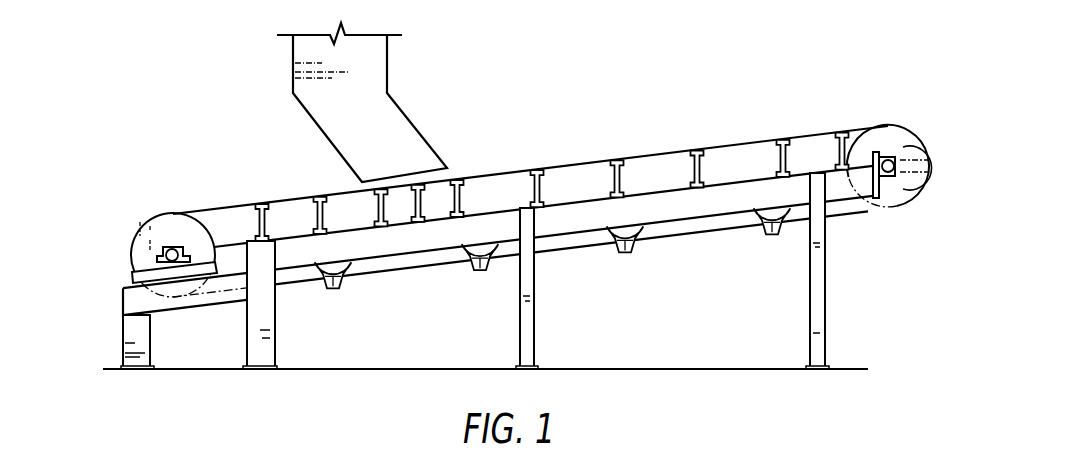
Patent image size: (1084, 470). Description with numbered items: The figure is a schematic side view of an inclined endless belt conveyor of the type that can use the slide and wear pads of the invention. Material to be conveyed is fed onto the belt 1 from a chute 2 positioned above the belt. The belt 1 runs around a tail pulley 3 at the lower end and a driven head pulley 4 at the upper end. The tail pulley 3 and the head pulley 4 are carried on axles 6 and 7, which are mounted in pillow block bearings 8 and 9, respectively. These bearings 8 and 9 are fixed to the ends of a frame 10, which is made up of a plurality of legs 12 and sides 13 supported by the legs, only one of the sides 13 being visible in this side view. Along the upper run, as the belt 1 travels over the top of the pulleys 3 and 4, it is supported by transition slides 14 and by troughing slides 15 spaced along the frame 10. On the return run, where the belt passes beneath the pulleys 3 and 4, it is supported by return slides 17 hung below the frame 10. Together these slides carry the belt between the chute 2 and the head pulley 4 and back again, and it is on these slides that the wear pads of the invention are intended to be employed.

The belt 1 is at (666, 152).
The chute 2 is at (358, 129).
The tail pulley 3 is at (132, 250).
The driven head pulley 4 is at (888, 124).
The axle 6 is at (170, 247).
The axle 7 is at (901, 151).
The pillow block bearing 8 is at (153, 247).
The pillow block bearing 9 is at (906, 191).
The frame 10 is at (858, 307).
The legs 12 is at (247, 345).
The sides 13 is at (391, 252).
The transition slides 14 is at (313, 194).
The troughing slides 15 is at (538, 168).
The return slides 17 is at (337, 298).